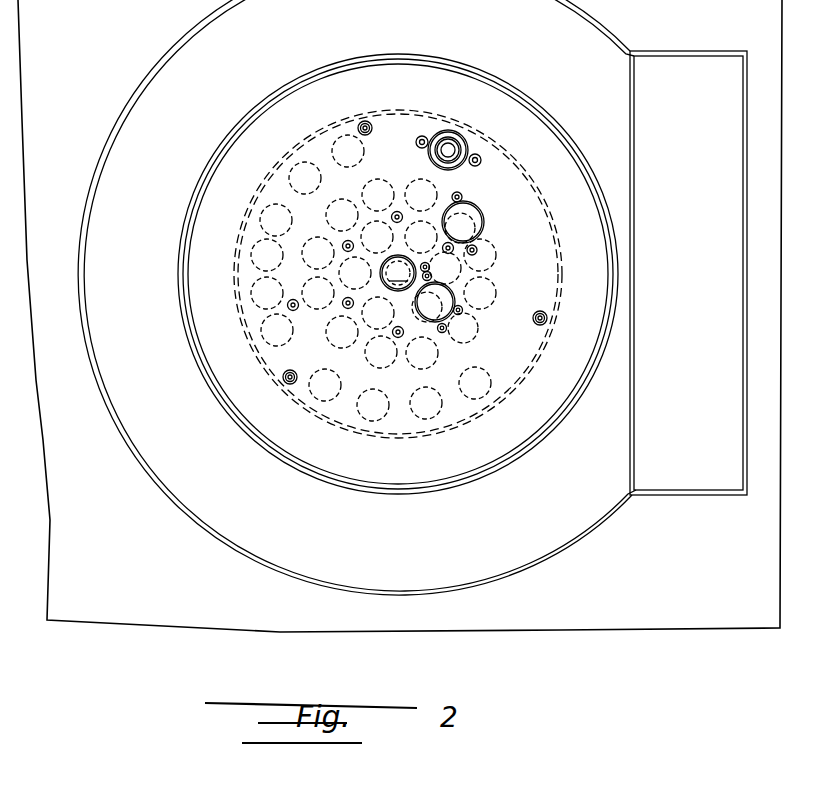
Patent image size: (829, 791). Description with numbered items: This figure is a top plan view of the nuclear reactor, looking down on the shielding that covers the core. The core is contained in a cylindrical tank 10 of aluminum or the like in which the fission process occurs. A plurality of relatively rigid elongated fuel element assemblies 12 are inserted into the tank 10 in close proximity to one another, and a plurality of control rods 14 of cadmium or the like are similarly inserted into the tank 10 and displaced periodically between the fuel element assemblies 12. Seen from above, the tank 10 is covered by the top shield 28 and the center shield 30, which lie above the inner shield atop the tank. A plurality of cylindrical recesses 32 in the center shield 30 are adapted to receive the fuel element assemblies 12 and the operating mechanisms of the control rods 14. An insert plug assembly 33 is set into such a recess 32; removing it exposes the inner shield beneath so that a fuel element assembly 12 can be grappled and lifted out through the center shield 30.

The cylindrical tank 10 is at (252, 327).
The fuel element assemblies 12 is at (332, 152).
The control rods 14 is at (352, 240).
The top shield 28 is at (554, 545).
The center shield 30 is at (493, 457).
The cylindrical recesses 32 is at (448, 130).
The insert plug assembly 33 is at (478, 227).